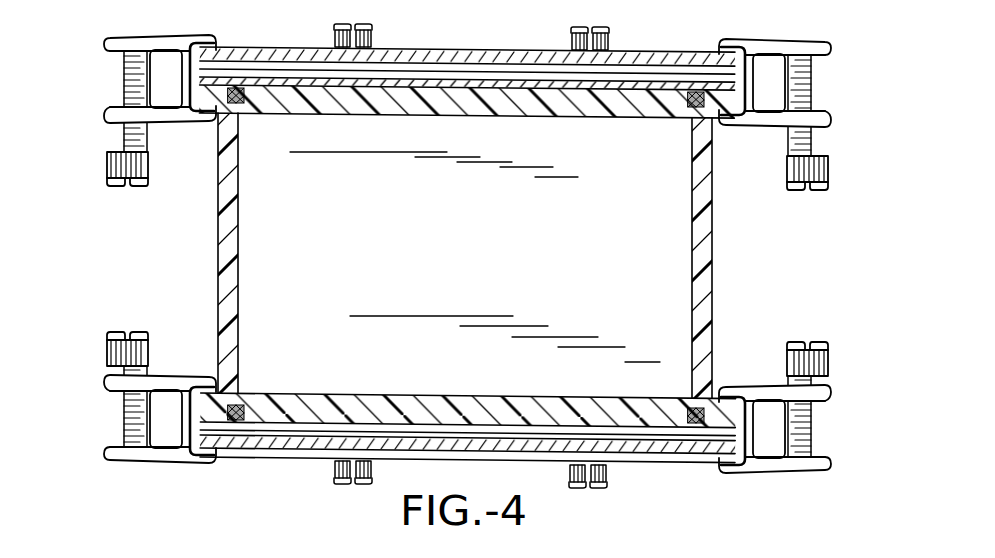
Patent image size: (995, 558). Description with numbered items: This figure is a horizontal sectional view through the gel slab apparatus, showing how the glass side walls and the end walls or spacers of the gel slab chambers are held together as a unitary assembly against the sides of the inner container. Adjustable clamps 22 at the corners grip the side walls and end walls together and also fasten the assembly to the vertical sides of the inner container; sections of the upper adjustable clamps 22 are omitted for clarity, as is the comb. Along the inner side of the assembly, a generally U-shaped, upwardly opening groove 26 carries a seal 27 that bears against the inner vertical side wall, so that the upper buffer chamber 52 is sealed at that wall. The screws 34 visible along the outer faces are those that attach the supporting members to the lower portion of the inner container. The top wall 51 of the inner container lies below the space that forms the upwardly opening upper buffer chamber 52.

The adjustable clamps 22 is at (106, 110).
The groove 26 is at (688, 107).
The seal 27 is at (236, 95).
The screws 34 is at (362, 26).
The top wall 51 is at (543, 240).
The upper buffer chamber 52 is at (490, 257).